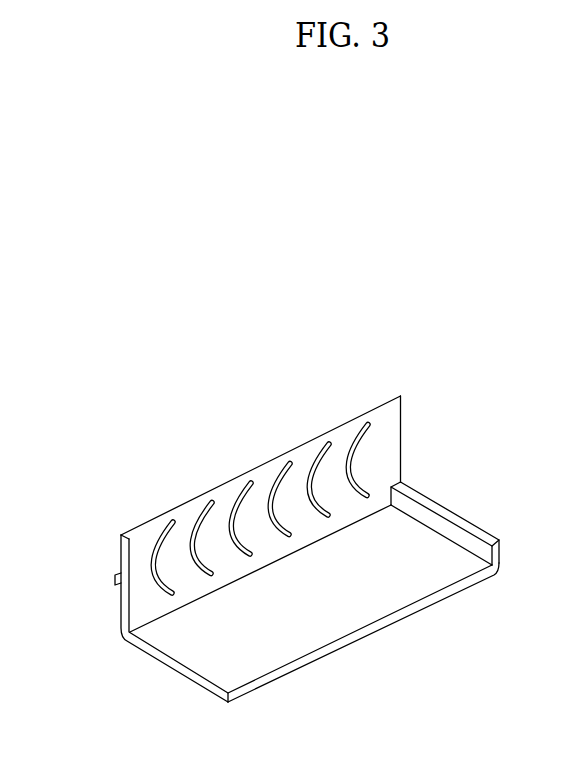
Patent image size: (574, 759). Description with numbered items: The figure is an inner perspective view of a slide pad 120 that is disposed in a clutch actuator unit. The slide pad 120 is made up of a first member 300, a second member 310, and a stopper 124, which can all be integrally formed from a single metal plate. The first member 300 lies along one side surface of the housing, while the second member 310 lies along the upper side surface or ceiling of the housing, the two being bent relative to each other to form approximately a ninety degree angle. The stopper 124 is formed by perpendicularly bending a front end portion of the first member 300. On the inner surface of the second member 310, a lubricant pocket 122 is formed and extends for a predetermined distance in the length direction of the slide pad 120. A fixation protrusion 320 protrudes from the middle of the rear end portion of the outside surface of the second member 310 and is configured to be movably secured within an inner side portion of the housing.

The slide pad 120 is at (281, 560).
The second member 310 is at (145, 535).
The fixation protrusion 320 is at (115, 579).
The lubricant pocket 122 is at (318, 470).
The stopper 124 is at (458, 535).
The first member 300 is at (387, 567).